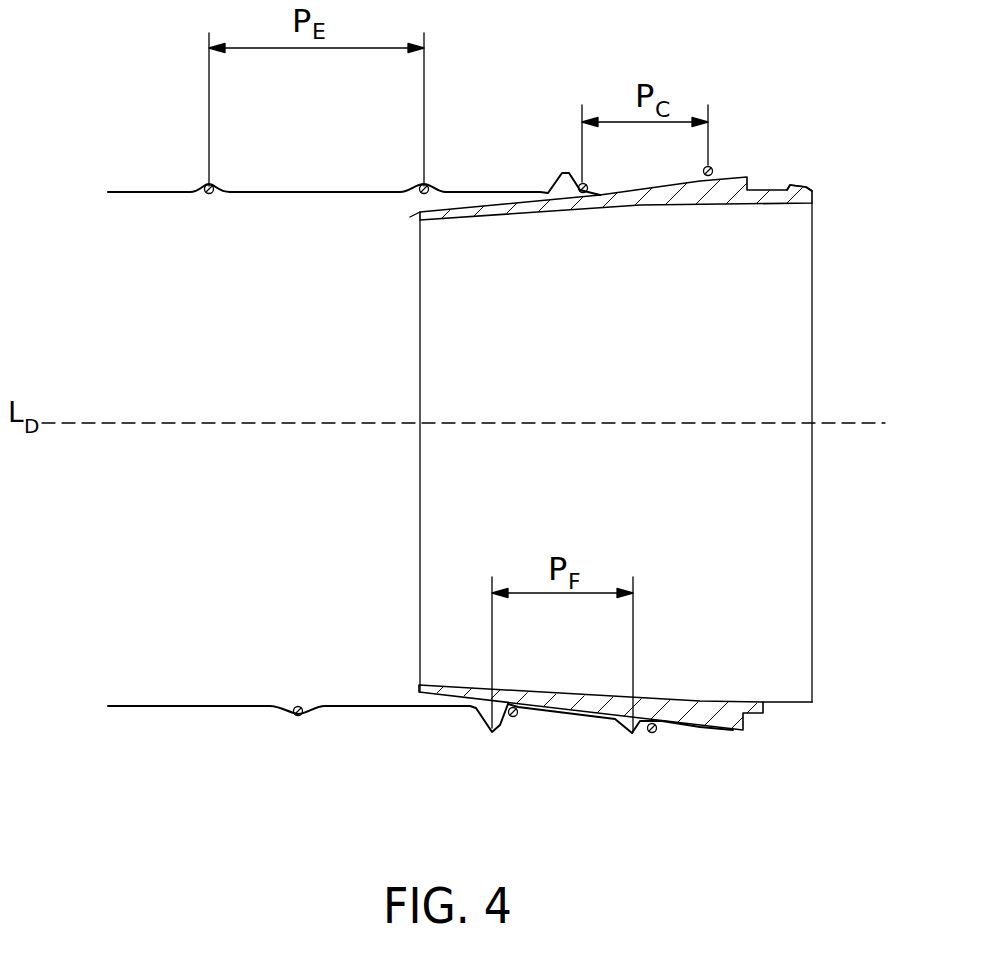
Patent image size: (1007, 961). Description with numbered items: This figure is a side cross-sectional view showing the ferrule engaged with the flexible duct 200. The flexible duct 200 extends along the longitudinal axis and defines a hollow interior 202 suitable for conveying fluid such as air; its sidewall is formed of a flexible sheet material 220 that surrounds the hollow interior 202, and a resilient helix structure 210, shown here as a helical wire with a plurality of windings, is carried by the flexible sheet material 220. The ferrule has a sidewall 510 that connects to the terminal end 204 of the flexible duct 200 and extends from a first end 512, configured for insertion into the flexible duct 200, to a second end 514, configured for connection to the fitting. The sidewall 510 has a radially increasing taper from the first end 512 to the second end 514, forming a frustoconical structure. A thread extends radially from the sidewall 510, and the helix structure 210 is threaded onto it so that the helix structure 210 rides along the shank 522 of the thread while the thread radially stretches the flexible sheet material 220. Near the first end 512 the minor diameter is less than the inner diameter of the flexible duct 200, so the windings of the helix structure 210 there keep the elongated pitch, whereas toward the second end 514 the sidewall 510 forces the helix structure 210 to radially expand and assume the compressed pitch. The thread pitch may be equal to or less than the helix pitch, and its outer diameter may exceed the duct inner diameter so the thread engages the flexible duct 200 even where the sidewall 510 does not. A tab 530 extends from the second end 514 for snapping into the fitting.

The flexible duct 200 is at (118, 157).
The hollow interior 202 is at (217, 357).
The terminal end 204 is at (680, 731).
The helix structure 210 is at (576, 174).
The flexible sheet material 220 is at (297, 192).
The sidewall 510 is at (533, 688).
The first end 512 is at (410, 217).
The second end 514 is at (812, 340).
The shank 522 is at (492, 733).
The tab 530 is at (800, 186).